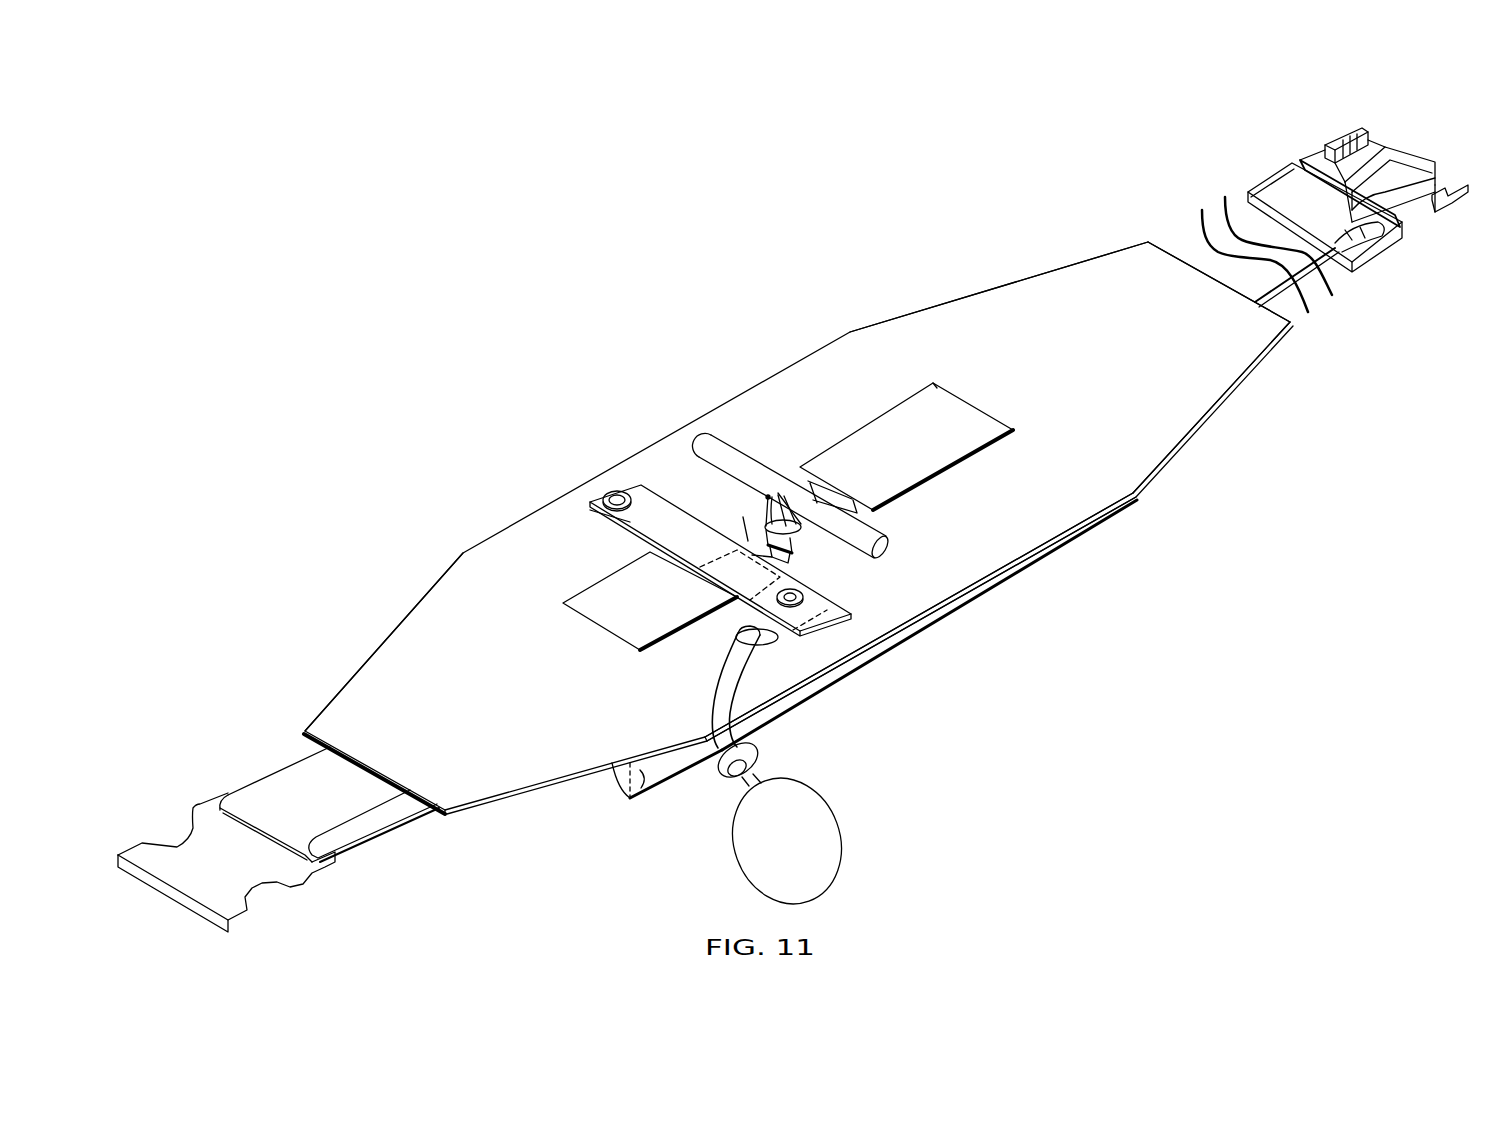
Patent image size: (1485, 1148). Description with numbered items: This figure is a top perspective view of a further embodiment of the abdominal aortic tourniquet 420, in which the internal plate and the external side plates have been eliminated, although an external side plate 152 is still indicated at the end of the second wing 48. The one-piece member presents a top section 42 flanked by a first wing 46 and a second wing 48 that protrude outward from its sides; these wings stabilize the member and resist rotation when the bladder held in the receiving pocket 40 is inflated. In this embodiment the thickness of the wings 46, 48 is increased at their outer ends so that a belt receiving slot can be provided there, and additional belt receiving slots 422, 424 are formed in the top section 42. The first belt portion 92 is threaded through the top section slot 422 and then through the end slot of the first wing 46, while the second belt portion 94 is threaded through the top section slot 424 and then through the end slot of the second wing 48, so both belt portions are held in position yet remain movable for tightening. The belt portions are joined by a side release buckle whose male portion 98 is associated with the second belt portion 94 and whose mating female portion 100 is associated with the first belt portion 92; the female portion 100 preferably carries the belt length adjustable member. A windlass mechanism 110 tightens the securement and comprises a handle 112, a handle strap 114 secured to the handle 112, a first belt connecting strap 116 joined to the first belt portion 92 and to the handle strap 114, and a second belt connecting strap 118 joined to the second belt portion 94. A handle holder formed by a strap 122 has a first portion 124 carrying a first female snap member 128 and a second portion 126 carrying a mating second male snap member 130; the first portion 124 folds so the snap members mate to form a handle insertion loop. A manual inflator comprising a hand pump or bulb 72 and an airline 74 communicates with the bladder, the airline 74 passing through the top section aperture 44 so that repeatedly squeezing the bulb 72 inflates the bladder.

The abdominal aortic tourniquet 420 is at (1088, 156).
The top section 42 is at (1023, 522).
The top section aperture 44 is at (827, 677).
The first wing 46 is at (392, 662).
The second wing 48 is at (1050, 292).
The external side plate 152 is at (1150, 426).
The handle 112 is at (985, 582).
The second male snap member 130 is at (880, 632).
The receiving pocket 40 is at (628, 796).
The first belt portion 92 is at (266, 792).
The female portion 100 is at (162, 828).
The second belt portion 94 is at (1198, 257).
The male portion 98 is at (1337, 125).
The windlass mechanism 110 is at (746, 438).
The second belt connecting strap 118 is at (828, 488).
The belt receiving slot 424 is at (955, 405).
The belt receiving slot 422 is at (592, 625).
The strap 122 is at (617, 533).
The first portion 124 is at (580, 510).
The first female snap member 128 is at (612, 488).
The second portion 126 is at (763, 600).
The handle strap 114 is at (766, 500).
The first belt connecting strap 116 is at (783, 545).
The airline 74 is at (723, 698).
The hand pump 72 is at (843, 850).